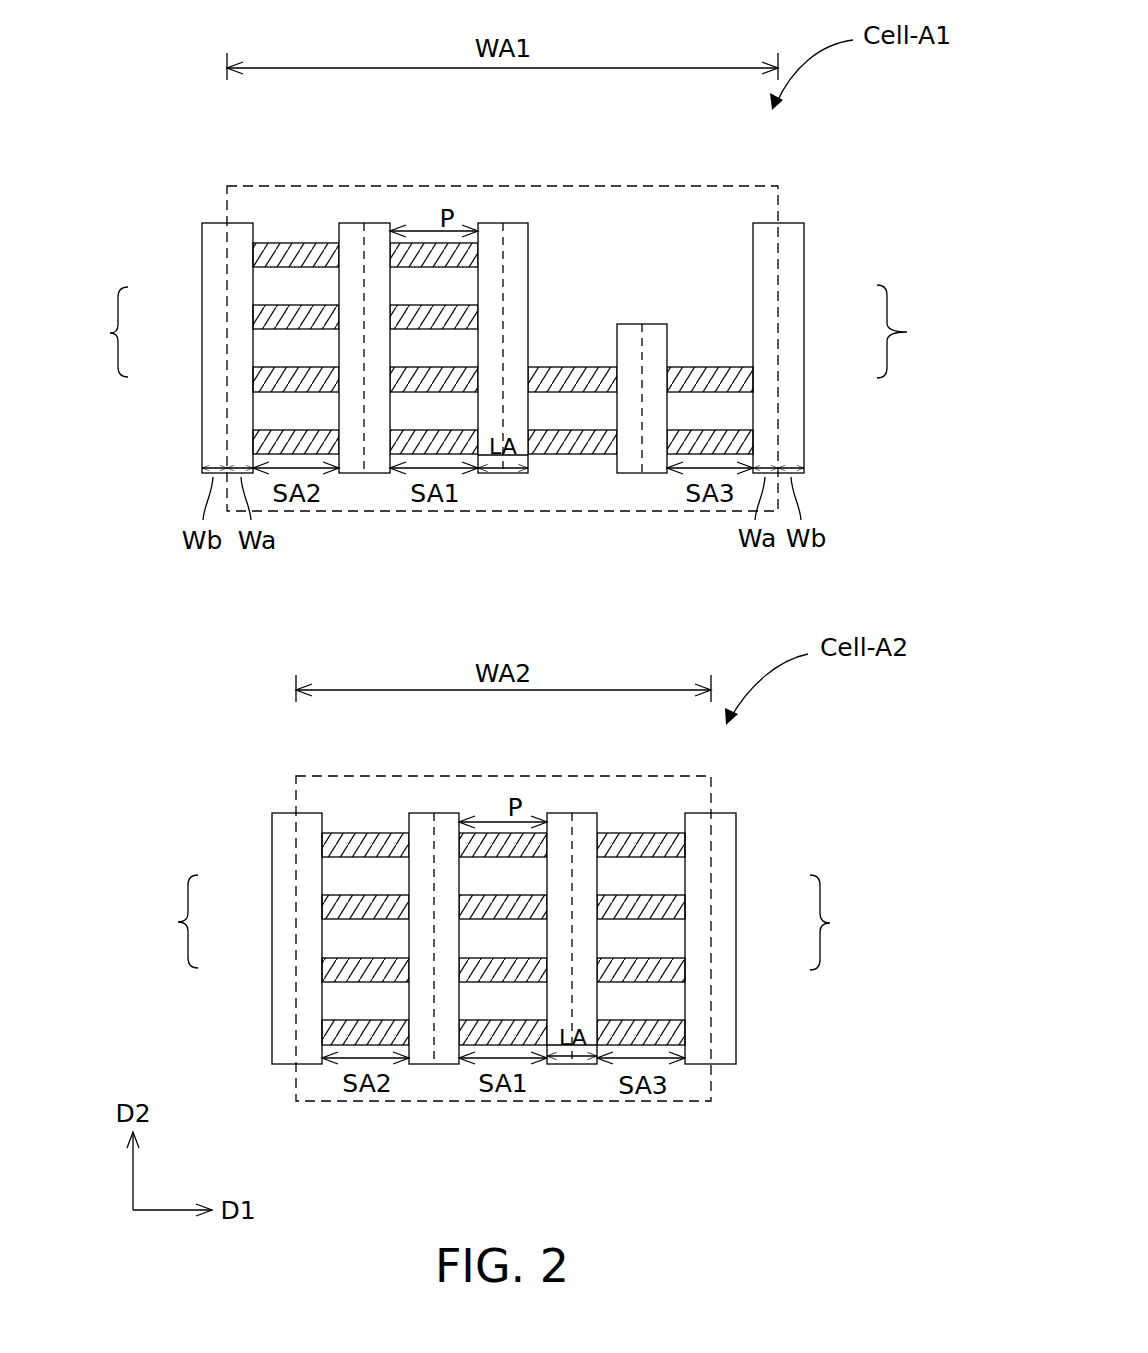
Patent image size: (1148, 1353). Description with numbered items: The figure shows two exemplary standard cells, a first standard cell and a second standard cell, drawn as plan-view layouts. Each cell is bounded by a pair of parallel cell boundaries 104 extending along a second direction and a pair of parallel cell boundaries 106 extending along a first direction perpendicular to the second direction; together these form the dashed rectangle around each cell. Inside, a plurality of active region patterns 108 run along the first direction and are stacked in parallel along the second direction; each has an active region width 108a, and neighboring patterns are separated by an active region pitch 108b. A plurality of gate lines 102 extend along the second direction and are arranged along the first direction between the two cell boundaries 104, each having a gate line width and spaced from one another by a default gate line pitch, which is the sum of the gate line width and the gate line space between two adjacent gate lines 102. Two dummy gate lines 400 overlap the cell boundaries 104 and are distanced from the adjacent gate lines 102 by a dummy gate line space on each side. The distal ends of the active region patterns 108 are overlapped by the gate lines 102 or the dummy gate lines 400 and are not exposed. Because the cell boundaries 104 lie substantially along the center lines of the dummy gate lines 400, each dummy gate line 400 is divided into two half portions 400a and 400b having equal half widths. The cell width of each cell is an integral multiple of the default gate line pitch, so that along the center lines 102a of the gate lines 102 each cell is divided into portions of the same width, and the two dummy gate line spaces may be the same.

The gate line 102 is at (364, 223).
The center line 102a is at (363, 248).
The cell boundary 104 is at (227, 205).
The cell boundary 106 is at (606, 186).
The active region pattern 108 is at (463, 317).
The active region width 108a is at (330, 305).
The active region pitch 108b is at (400, 305).
The dummy gate line 400 is at (108, 333).
The half portion 400a is at (242, 353).
The half portion 400b is at (217, 310).